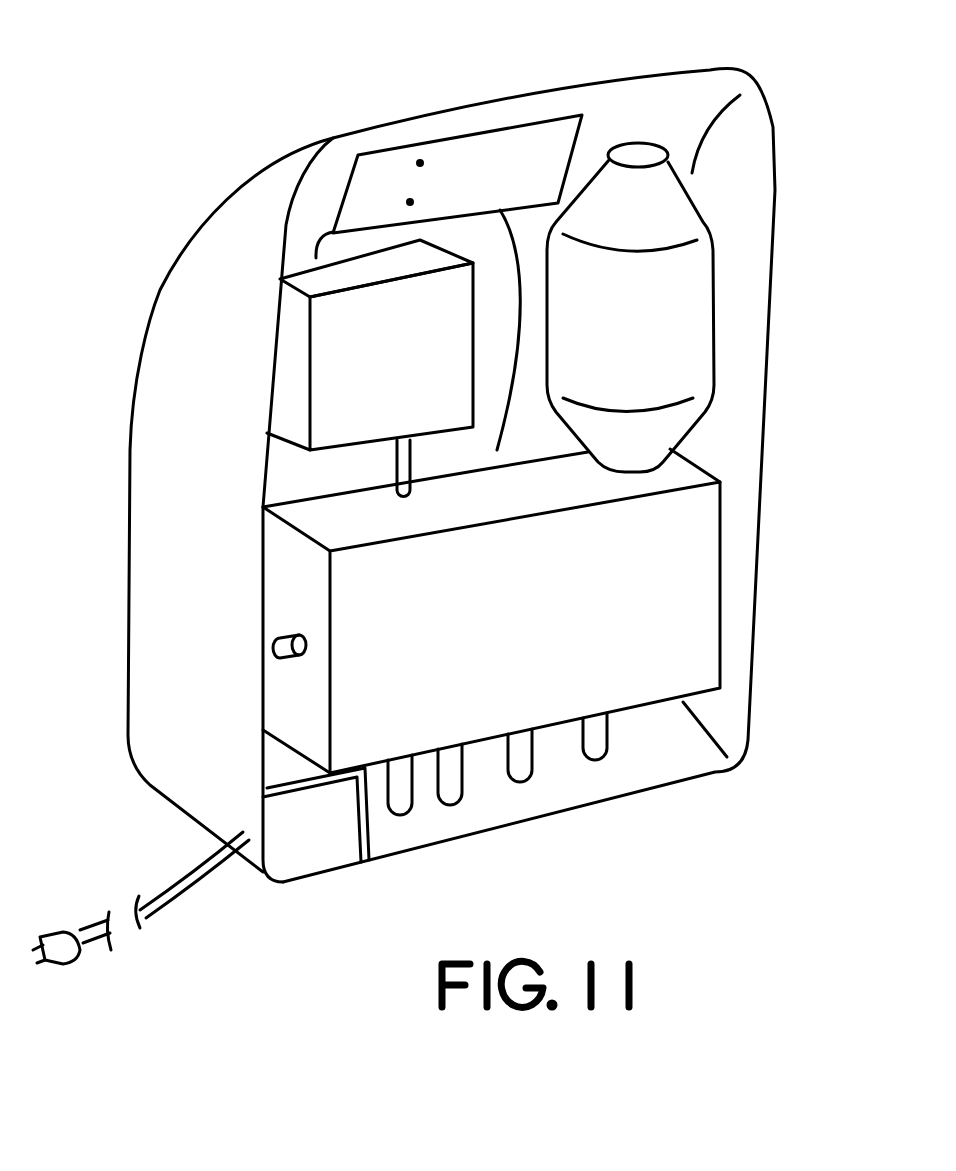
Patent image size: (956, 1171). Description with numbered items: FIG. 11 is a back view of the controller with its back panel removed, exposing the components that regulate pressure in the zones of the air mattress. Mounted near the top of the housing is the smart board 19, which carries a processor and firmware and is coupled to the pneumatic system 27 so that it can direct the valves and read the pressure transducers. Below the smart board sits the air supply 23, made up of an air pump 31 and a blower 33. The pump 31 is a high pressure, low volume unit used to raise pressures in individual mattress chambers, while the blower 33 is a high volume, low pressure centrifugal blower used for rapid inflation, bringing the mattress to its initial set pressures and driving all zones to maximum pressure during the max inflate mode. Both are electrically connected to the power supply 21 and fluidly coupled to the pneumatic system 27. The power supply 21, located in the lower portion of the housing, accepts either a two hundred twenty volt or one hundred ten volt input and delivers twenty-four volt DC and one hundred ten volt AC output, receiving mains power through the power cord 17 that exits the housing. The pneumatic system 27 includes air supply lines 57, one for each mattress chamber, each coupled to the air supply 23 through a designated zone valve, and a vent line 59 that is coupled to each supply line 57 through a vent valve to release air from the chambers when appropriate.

The power cord 17 is at (182, 902).
The smart board 19 is at (407, 165).
The power supply 21 is at (320, 833).
The air supply 23 is at (524, 421).
The pneumatic system 27 is at (693, 643).
The air pump 31 is at (353, 343).
The blower 33 is at (722, 303).
The air supply lines 57 is at (597, 753).
The vent line 59 is at (292, 635).